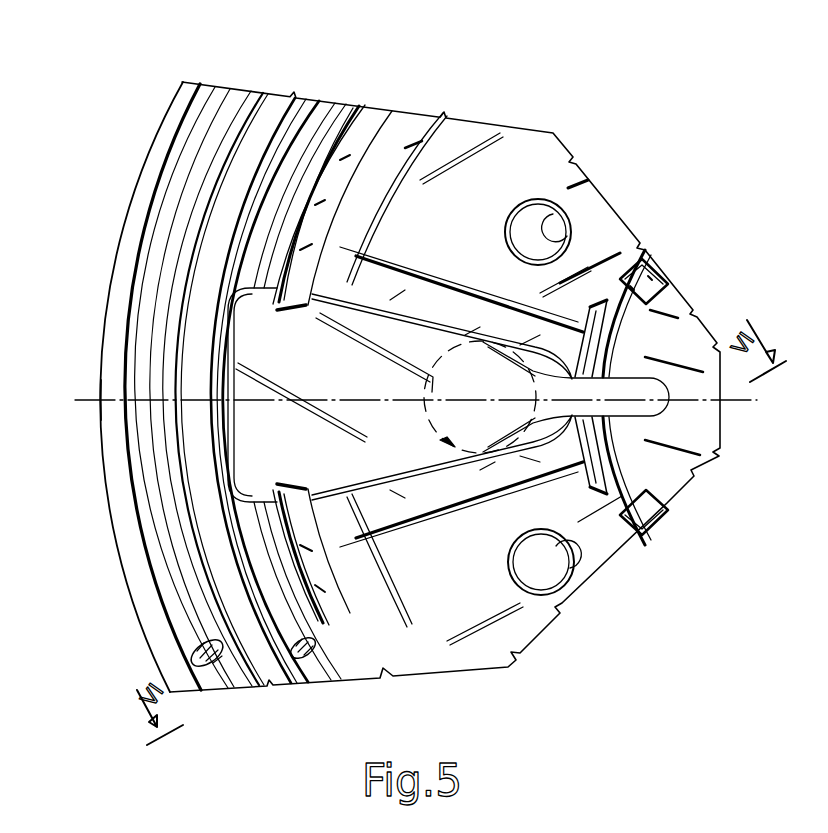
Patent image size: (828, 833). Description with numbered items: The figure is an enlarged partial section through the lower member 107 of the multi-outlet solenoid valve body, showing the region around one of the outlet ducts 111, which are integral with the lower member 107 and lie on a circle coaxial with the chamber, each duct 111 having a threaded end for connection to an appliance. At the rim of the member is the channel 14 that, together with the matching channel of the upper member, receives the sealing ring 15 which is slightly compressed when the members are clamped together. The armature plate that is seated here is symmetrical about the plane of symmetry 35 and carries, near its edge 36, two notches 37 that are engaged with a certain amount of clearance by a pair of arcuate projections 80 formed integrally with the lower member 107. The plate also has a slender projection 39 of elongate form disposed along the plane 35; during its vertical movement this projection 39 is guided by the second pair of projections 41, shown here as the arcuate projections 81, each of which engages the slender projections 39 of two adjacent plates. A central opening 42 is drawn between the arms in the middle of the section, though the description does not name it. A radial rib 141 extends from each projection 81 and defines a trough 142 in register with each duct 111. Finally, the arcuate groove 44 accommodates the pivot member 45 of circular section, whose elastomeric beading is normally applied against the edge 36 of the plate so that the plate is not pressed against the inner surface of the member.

The channel 14 is at (245, 662).
The sealing ring 15 is at (227, 118).
The plane of symmetry 35 is at (98, 400).
The edge 36 is at (240, 416).
The notches 37 is at (296, 318).
The slender projection 39 is at (668, 353).
The projections 41 is at (592, 309).
The central opening 42 is at (441, 349).
The arcuate groove 44 is at (340, 667).
The pivot member 45 is at (327, 120).
The arcuate projections 80 is at (350, 207).
The projections 81 is at (613, 449).
The lower member 107 is at (521, 647).
The outlet ducts 111 is at (567, 232).
The radial rib 141 is at (426, 271).
The trough 142 is at (575, 518).